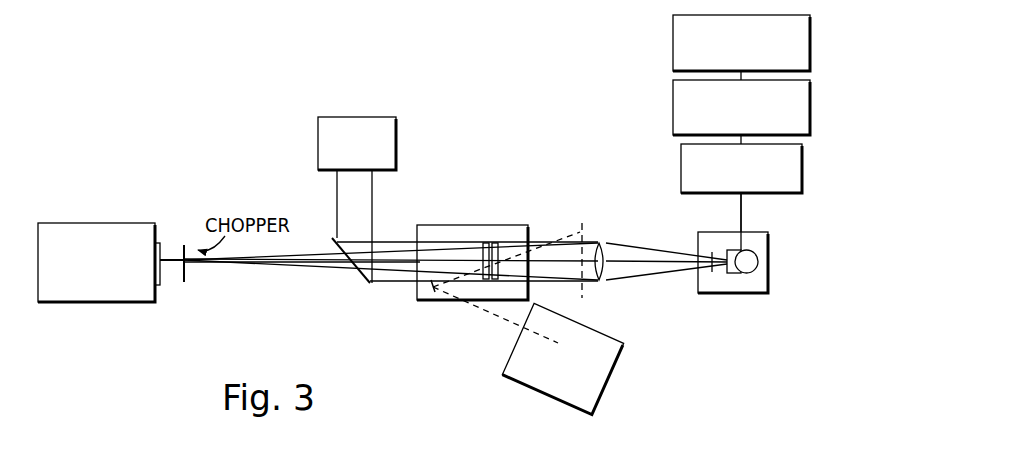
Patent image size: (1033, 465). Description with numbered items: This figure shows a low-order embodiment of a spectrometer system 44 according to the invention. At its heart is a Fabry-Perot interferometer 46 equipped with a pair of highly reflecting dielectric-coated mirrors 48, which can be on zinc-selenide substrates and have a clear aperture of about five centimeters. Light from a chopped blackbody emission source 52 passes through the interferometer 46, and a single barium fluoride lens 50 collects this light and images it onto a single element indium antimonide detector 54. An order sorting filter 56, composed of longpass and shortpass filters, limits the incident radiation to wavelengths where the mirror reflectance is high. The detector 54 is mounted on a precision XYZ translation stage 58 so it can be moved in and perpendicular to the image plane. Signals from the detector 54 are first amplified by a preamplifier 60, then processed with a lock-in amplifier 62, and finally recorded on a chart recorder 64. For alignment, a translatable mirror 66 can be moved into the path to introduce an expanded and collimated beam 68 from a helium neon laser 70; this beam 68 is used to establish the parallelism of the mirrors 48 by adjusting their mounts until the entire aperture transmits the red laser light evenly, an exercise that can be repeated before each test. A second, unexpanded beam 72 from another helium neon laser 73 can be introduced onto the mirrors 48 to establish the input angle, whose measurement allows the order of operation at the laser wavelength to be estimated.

The spectrometer system 44 is at (561, 96).
The Fabry-Perot interferometer 46 is at (506, 222).
The mirrors 48 is at (494, 240).
The lens 50 is at (601, 243).
The blackbody emission source 52 is at (135, 302).
The detector 54 is at (768, 293).
The order sorting filter 56 is at (712, 275).
The XYZ translation stage 58 is at (727, 294).
The preamplifier 60 is at (681, 168).
The lock-in amplifier 62 is at (673, 100).
The chart recorder 64 is at (673, 40).
The translatable mirror 66 is at (366, 288).
The collimated beam 68 is at (336, 205).
The helium neon laser 70 is at (375, 117).
The second beam 72 is at (482, 307).
The helium neon laser 73 is at (512, 350).